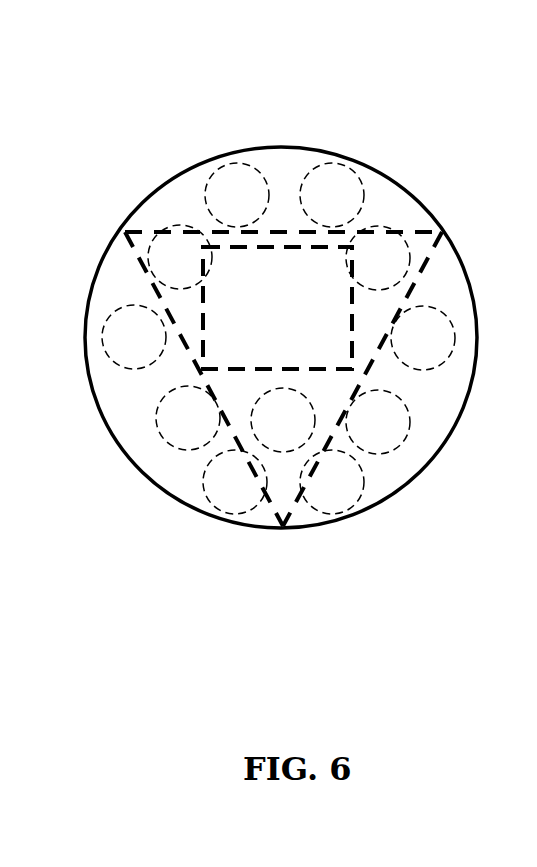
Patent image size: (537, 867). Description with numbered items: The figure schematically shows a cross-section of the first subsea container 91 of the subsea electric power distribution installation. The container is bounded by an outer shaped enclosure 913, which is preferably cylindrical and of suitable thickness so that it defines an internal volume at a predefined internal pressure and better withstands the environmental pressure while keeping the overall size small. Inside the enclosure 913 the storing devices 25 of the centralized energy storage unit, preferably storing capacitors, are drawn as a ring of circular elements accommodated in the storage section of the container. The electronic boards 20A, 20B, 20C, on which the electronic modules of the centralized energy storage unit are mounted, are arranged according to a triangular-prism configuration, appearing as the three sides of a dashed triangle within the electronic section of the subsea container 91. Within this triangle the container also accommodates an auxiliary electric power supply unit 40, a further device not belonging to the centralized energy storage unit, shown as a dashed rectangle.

The first subsea container 91 is at (276, 310).
The outer shaped enclosure 913 is at (287, 142).
The electronic board 20A is at (140, 278).
The electronic board 20B is at (192, 229).
The electronic board 20C is at (420, 278).
The storing devices 25 is at (345, 188).
The auxiliary electric power supply unit 40 is at (317, 323).